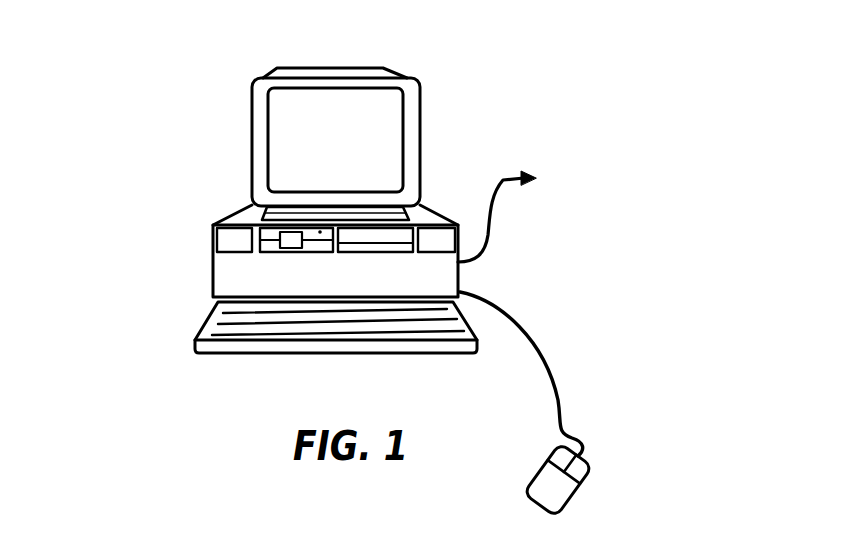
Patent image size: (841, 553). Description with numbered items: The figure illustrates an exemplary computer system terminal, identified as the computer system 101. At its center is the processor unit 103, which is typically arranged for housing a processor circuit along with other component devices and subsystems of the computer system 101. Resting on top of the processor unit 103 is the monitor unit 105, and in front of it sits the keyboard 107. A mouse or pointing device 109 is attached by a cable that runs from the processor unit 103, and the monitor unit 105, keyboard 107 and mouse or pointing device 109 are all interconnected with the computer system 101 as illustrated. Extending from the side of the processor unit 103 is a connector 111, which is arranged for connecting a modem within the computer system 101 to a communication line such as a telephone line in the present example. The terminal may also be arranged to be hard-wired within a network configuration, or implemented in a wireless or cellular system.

The computer system 101 is at (648, 259).
The processor unit 103 is at (232, 267).
The monitor unit 105 is at (250, 162).
The keyboard 107 is at (197, 340).
The mouse or pointing device 109 is at (578, 497).
The connector 111 is at (523, 170).